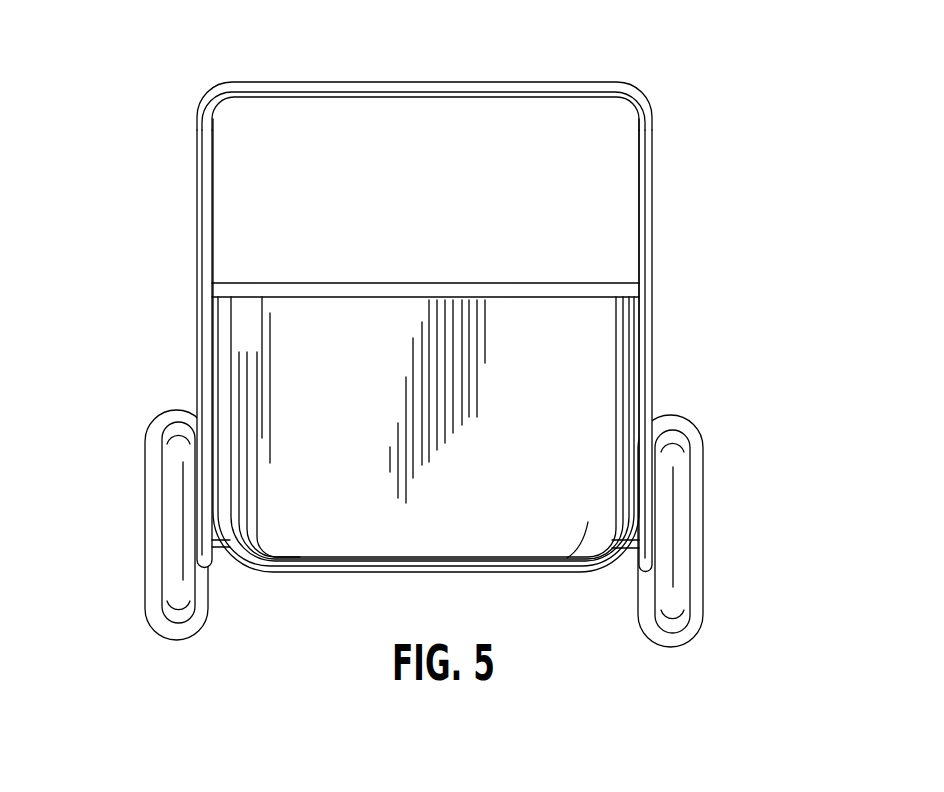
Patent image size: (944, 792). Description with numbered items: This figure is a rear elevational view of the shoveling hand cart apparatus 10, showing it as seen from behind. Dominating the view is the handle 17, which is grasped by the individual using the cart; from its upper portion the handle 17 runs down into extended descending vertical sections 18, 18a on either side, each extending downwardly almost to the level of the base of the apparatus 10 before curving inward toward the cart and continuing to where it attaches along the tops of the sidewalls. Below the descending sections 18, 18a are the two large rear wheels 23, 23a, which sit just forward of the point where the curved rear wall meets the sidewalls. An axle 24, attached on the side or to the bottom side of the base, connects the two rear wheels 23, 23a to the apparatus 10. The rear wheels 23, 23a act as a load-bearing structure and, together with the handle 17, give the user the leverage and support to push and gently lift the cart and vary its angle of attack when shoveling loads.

The shoveling hand cart apparatus 10 is at (700, 165).
The handle 17 is at (428, 94).
The extended descending vertical section 18 is at (205, 231).
The extended descending vertical section 18a is at (653, 247).
The large rear wheel 23 is at (690, 478).
The large rear wheel 23a is at (160, 463).
The axle 24 is at (229, 549).